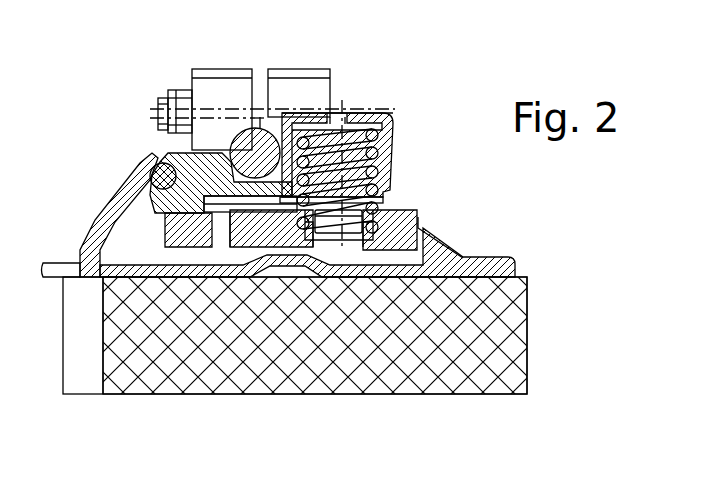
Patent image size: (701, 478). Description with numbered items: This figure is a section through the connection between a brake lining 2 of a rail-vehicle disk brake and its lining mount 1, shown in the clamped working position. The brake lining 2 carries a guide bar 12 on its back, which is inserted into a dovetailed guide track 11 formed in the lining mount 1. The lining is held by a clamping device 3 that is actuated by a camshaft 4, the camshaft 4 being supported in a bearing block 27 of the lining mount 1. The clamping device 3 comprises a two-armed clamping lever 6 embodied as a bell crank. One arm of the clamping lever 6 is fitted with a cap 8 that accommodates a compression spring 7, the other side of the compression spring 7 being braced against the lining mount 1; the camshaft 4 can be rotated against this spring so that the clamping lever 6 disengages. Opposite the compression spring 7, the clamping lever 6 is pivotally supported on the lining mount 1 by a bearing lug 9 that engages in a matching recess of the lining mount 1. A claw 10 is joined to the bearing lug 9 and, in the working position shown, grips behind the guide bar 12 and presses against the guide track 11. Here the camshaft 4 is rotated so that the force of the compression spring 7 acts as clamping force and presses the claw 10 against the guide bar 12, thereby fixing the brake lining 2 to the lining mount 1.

The lining mount 1 is at (446, 262).
The brake lining 2 is at (128, 399).
The clamping device 3 is at (392, 96).
The camshaft 4 is at (250, 150).
The clamping lever 6 is at (187, 152).
The compression spring 7 is at (392, 150).
The cap 8 is at (397, 175).
The bearing lug 9 is at (160, 187).
The claw 10 is at (178, 287).
The guide track 11 is at (343, 255).
The guide bar 12 is at (337, 257).
The bearing block 27 is at (285, 88).